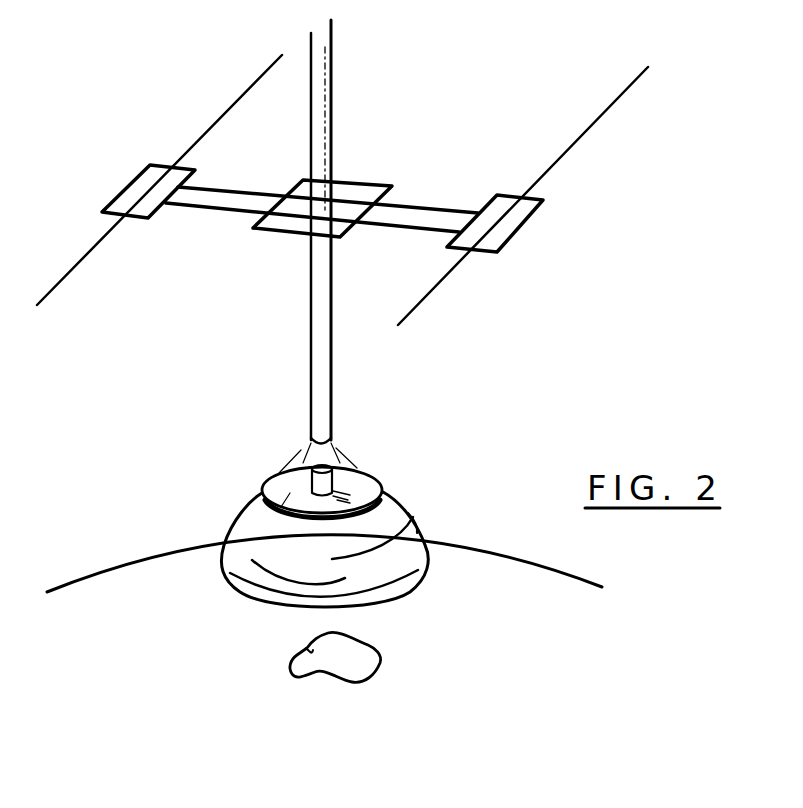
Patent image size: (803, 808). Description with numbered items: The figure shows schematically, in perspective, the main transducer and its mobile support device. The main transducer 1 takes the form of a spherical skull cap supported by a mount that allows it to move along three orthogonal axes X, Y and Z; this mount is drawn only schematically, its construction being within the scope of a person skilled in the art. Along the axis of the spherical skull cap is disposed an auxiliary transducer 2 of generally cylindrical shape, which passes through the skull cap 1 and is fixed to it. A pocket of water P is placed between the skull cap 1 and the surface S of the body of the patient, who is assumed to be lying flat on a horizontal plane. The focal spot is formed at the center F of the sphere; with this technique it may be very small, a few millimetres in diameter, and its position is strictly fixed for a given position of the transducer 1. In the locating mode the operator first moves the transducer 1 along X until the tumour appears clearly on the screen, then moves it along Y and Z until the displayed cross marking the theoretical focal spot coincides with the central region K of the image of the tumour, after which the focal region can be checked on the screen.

The main transducer 1 is at (360, 492).
The auxiliary transducer 2 is at (315, 479).
The pocket of water P is at (243, 525).
The surface of the body of the patient S is at (324, 574).
The center of the sphere F is at (313, 650).
The central region of the image of the tumour K is at (381, 662).
The X axis X is at (322, 208).
The Y axis Y is at (342, 190).
The Z axis Z is at (331, 246).